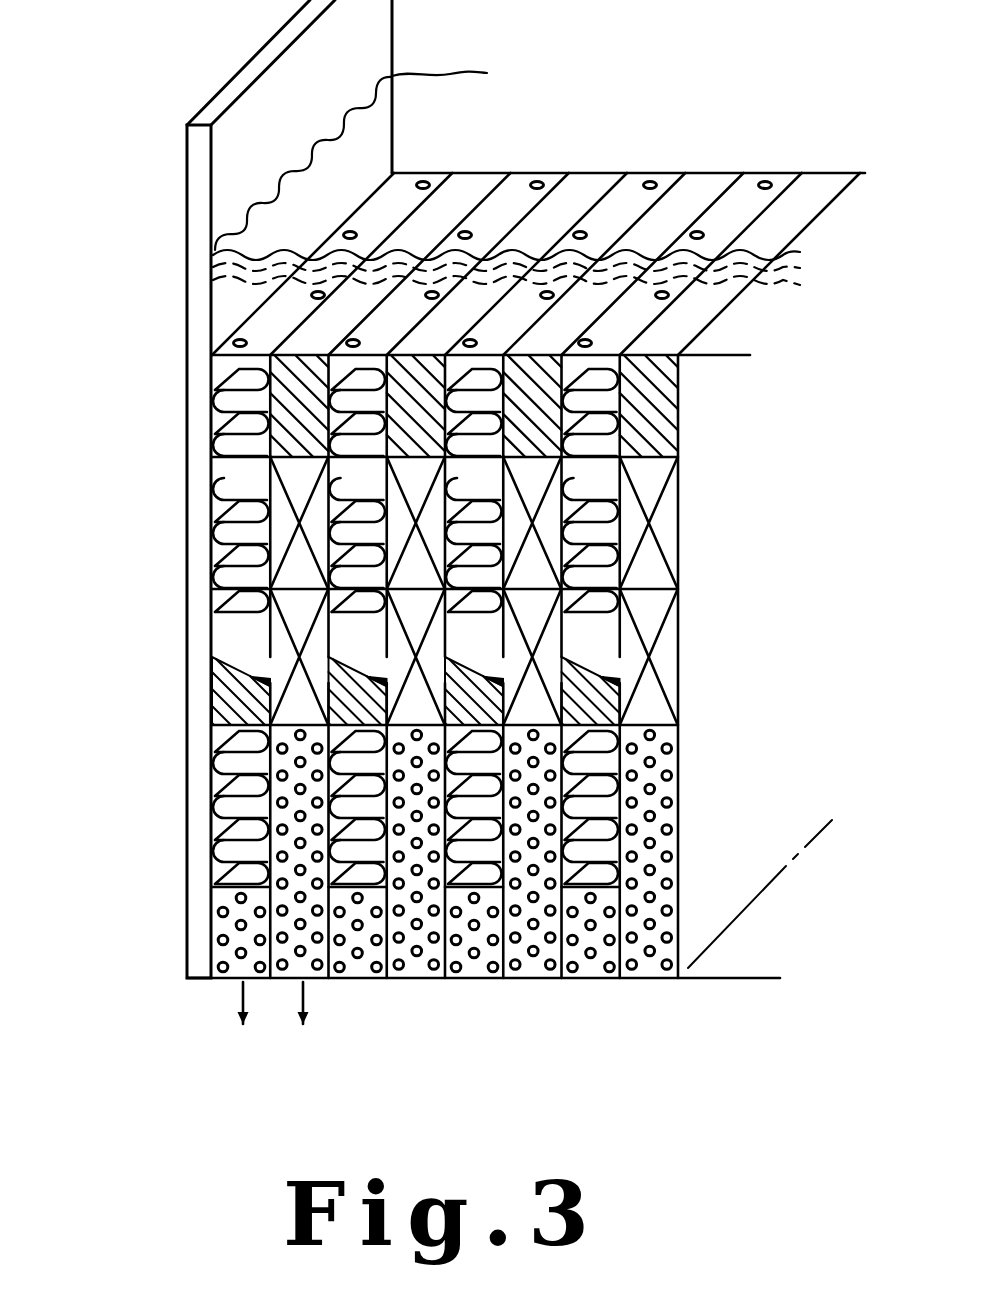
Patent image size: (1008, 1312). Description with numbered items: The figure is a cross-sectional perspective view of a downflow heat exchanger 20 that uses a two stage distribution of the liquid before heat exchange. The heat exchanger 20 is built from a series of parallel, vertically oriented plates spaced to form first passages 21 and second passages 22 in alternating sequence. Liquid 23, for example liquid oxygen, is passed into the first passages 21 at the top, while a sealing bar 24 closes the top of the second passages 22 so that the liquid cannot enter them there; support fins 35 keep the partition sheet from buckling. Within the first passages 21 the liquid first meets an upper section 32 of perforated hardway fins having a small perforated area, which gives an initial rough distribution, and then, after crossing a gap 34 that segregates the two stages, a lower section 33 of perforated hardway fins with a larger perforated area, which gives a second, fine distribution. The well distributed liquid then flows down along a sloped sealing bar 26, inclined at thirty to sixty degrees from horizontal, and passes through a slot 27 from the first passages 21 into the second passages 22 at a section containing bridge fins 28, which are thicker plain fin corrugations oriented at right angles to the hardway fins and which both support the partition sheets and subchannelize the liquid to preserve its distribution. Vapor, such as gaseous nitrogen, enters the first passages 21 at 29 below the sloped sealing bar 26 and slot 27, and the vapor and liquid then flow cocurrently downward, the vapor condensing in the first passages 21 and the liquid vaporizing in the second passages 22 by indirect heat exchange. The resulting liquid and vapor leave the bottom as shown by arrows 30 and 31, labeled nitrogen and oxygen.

The heat exchanger 20 is at (178, 162).
The first passages 21 is at (421, 170).
The second passages 22 is at (474, 170).
The liquid 23 is at (773, 250).
The sealing bar 24 is at (655, 423).
The sloped sealing bar 26 is at (213, 701).
The slot 27 is at (243, 662).
The bridge fins 28 is at (655, 688).
The vapor inlet 29 is at (232, 829).
The liquid exit arrow 30 is at (243, 1000).
The vapor exit arrow 31 is at (303, 995).
The upper section 32 is at (225, 379).
The lower section 33 is at (228, 549).
The gap 34 is at (228, 470).
The support fins 35 is at (668, 542).